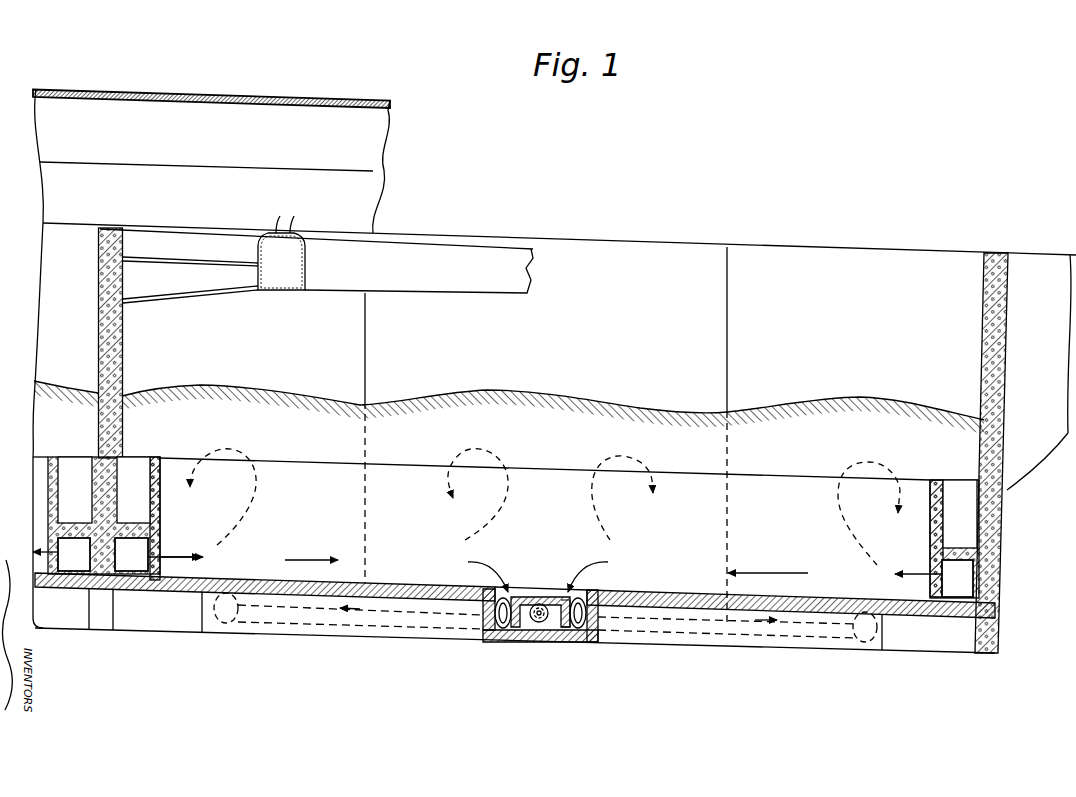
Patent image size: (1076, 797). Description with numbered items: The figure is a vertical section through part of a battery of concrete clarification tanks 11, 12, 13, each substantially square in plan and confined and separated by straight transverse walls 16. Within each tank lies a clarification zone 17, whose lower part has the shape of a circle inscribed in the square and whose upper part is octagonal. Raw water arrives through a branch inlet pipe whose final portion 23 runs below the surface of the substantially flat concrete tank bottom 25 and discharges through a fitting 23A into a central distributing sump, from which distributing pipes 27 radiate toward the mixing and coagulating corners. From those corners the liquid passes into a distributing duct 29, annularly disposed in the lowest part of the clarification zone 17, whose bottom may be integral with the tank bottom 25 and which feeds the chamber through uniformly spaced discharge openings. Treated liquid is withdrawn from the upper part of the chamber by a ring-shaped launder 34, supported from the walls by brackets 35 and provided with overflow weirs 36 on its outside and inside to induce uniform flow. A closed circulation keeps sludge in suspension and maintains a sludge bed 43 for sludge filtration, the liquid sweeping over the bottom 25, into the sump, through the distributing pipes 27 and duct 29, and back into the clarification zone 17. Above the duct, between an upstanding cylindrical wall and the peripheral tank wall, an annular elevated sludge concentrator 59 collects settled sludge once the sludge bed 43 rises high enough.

The clarification tank 11 is at (68, 223).
The clarification tank 12 is at (766, 245).
The clarification tank 13 is at (1034, 253).
The transverse wall 16 is at (98, 424).
The clarification zone 17 is at (560, 442).
The final portion of branch inlet pipe 23 is at (535, 622).
The fitting 23A is at (595, 615).
The tank bottom 25 is at (177, 592).
The distributing pipes 27 is at (326, 628).
The distributing duct 29 is at (85, 568).
The launder 34 is at (296, 273).
The brackets 35 is at (186, 302).
The overflow weirs 36 is at (290, 215).
The sludge bed 43 is at (388, 397).
The sludge concentrator 59 is at (85, 500).